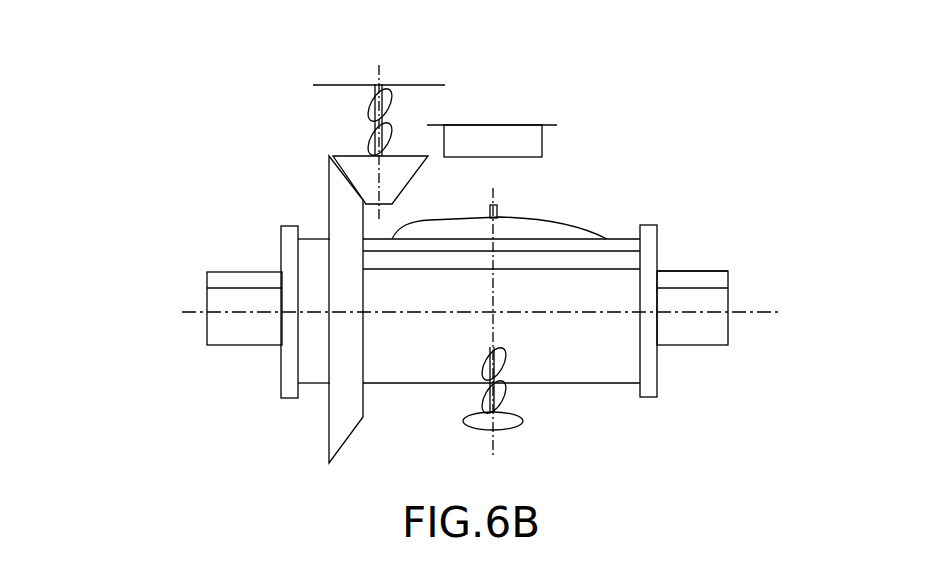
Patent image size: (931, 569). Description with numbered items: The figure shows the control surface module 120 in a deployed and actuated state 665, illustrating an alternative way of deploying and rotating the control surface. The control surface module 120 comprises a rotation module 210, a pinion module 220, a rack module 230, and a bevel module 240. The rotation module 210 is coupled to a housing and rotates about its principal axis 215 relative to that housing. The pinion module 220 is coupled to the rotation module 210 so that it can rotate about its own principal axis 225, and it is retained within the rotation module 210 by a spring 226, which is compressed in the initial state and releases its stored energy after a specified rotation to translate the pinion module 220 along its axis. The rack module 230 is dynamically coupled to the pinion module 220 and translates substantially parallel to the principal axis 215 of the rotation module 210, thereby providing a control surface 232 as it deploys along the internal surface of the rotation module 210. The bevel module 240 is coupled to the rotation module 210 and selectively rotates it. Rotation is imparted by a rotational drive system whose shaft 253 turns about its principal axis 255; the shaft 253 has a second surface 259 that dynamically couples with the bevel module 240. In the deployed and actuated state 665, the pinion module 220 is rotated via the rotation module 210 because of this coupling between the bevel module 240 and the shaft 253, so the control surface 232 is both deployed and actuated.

The control surface module 120 is at (628, 85).
The rotation module 210 is at (612, 240).
The principal axis of rotation module 215 is at (792, 305).
The pinion module 220 is at (497, 216).
The principal axis of pinion module 225 is at (493, 192).
The spring 226 is at (497, 400).
The rack module 230 is at (729, 325).
The control surface 232 is at (717, 280).
The bevel module 240 is at (330, 190).
The shaft 253 is at (405, 95).
The principal axis of shaft 255 is at (378, 72).
The second surface 259 is at (402, 152).
The deployed and actuated state 665 is at (125, 322).